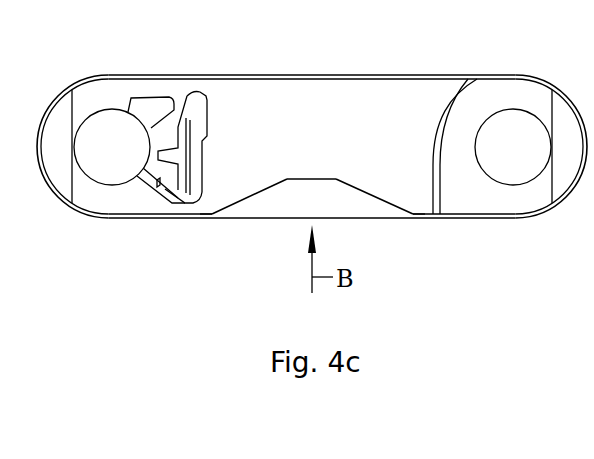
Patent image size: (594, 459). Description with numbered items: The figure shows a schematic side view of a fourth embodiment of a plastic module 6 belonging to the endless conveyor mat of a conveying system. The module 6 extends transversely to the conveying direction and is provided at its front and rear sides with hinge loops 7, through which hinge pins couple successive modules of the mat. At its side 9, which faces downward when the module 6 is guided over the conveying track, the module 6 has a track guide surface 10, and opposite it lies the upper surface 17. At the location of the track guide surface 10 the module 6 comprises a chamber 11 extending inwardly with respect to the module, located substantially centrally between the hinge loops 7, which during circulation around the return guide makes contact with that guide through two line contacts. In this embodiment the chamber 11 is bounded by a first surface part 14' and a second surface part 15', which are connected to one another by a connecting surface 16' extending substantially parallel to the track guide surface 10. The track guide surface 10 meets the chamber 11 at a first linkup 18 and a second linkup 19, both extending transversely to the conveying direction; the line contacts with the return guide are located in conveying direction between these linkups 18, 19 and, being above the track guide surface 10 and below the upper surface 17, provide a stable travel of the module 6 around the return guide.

The plastic module 6 is at (312, 111).
The hinge loops 7 is at (105, 159).
The side 9 is at (121, 218).
The track guide surface 10 is at (172, 218).
The chamber 11 is at (312, 172).
The first surface part 14' is at (249, 181).
The second surface part 15' is at (374, 181).
The connecting surface 16' is at (311, 152).
The upper surface 17 is at (312, 75).
The first linkup 18 is at (210, 215).
The second linkup 19 is at (412, 217).